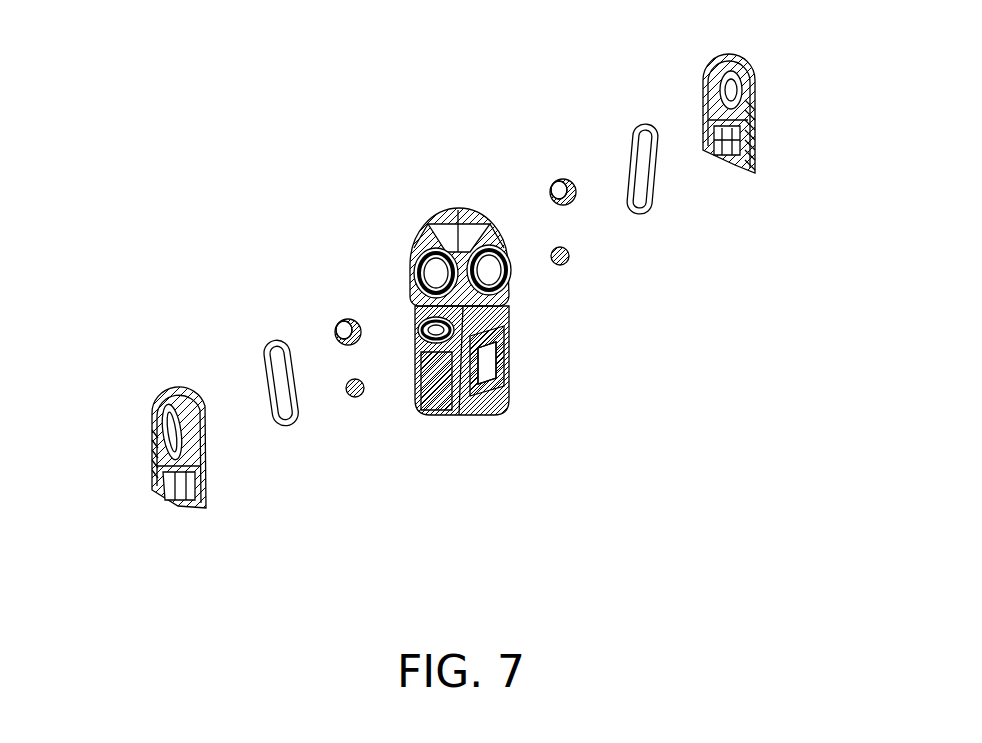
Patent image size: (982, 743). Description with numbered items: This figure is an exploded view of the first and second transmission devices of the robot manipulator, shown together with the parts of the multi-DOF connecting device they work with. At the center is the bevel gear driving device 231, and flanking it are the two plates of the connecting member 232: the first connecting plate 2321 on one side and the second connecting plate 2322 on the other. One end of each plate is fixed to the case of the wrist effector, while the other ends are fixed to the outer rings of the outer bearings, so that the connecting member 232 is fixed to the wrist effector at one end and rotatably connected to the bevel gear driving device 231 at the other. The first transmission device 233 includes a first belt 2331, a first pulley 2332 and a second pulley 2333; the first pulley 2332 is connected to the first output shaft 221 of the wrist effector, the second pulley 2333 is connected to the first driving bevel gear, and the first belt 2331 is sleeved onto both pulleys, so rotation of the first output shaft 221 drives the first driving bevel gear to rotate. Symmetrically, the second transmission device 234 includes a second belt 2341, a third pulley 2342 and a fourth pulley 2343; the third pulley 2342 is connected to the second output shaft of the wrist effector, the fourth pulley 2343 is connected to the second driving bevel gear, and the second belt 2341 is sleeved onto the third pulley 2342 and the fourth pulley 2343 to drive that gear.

The connecting member 232 is at (165, 25).
The first connecting plate 2321 is at (185, 392).
The second connecting plate 2322 is at (713, 77).
The bevel gear driving device 231 is at (430, 250).
The first output shaft 221 is at (420, 322).
The first transmission device 233 is at (505, 447).
The first belt 2331 is at (288, 428).
The first pulley 2332 is at (362, 397).
The second pulley 2333 is at (362, 345).
The second transmission device 234 is at (783, 250).
The second belt 2341 is at (648, 138).
The third pulley 2342 is at (573, 262).
The fourth pulley 2343 is at (580, 207).